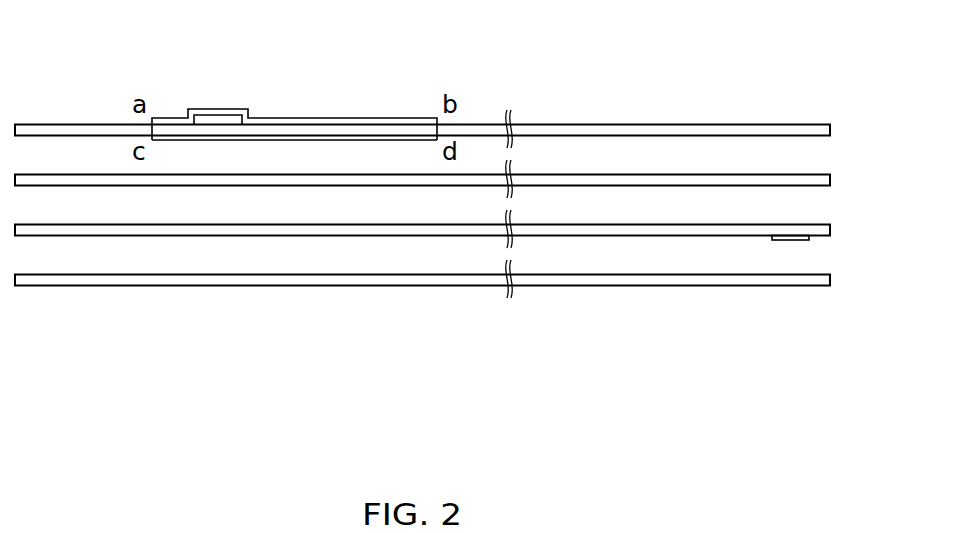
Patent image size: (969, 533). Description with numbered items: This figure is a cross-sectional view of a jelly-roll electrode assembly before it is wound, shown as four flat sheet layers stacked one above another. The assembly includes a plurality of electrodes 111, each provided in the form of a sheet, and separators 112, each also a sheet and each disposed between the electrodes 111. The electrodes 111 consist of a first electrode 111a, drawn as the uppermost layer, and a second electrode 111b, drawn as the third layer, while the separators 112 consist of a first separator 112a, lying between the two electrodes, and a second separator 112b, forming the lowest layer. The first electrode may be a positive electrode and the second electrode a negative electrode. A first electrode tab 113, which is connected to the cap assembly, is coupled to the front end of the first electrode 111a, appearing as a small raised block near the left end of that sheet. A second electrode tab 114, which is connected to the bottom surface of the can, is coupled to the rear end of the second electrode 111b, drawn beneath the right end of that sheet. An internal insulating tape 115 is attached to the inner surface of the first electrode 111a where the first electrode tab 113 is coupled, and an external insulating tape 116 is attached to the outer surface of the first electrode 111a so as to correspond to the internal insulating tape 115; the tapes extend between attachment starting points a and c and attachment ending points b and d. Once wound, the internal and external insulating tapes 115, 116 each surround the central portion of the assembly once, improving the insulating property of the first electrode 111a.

The electrodes 111 is at (422, 122).
The first electrode 111a is at (528, 128).
The second electrode 111b is at (607, 232).
The separators 112 is at (422, 147).
The first separator 112a is at (667, 178).
The second separator 112b is at (742, 277).
The first electrode tab 113 is at (219, 118).
The second electrode tab 114 is at (810, 238).
The internal insulating tape 115 is at (348, 122).
The external insulating tape 116 is at (412, 140).